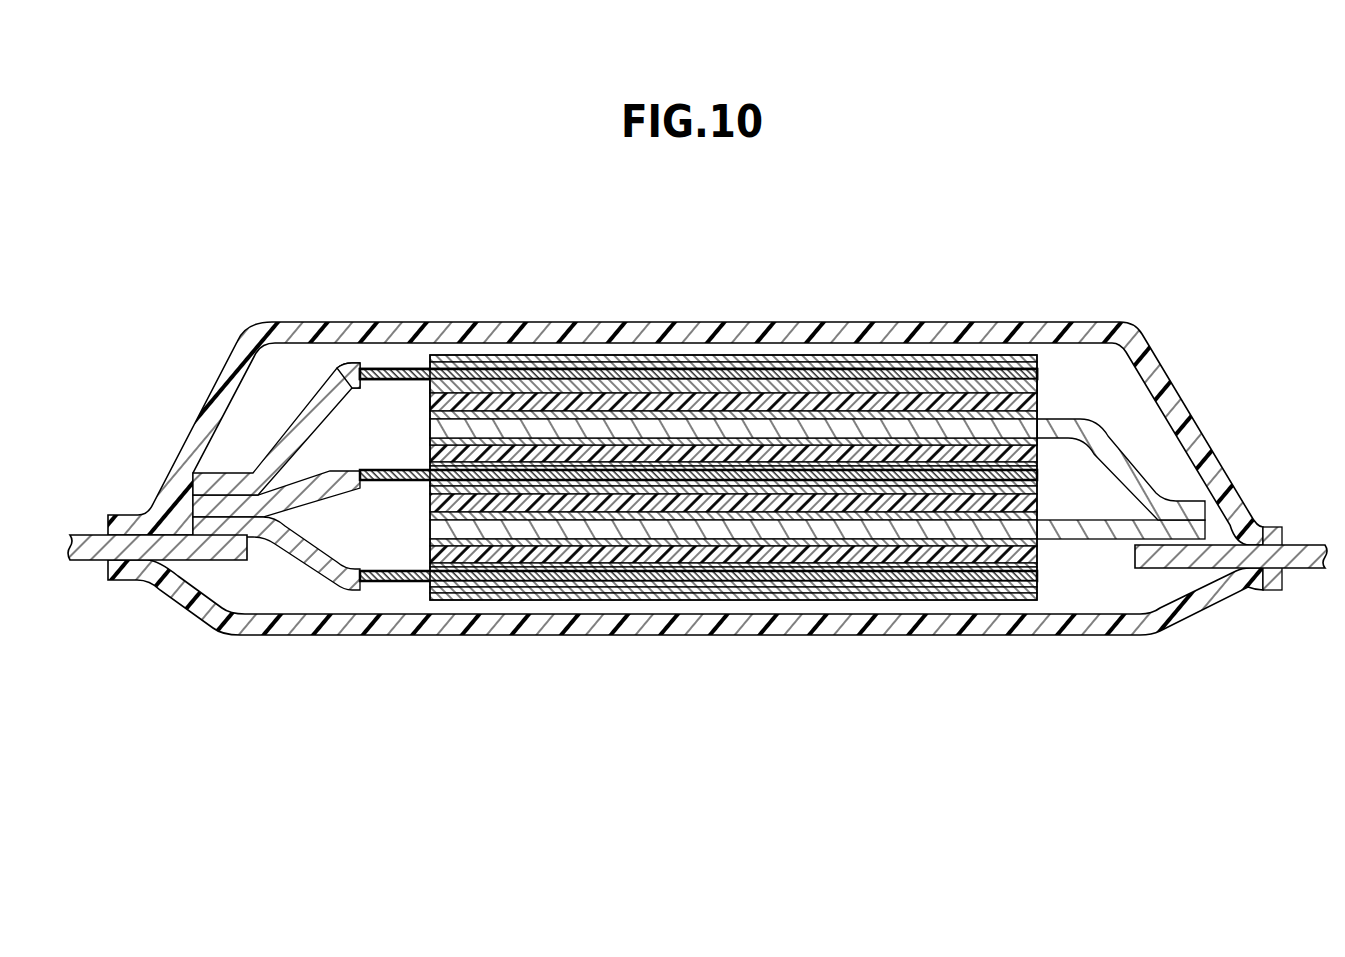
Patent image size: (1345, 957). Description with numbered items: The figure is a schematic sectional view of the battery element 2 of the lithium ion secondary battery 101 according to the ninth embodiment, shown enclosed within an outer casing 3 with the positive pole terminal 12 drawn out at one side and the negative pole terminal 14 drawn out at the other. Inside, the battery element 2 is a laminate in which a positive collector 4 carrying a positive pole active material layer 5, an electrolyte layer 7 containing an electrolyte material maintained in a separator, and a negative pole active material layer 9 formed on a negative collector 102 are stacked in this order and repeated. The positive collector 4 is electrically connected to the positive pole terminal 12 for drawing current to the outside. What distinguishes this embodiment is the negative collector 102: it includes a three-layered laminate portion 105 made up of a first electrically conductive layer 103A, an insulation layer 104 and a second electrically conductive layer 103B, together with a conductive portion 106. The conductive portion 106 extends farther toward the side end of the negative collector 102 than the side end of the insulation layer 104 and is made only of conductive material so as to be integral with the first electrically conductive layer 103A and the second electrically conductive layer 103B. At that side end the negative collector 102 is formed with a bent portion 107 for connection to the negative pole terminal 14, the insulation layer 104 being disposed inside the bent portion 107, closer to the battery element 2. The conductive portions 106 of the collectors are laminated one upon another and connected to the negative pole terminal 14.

The lithium ion secondary battery 101 is at (172, 253).
The negative collector 102 is at (404, 352).
The first electrically conductive layer 103A is at (694, 363).
The second electrically conductive layer 103B is at (620, 250).
The insulation layer 104 is at (631, 370).
The three-layered laminate portion 105 is at (698, 404).
The conductive portion 106 is at (318, 398).
The bent portion 107 is at (341, 366).
The negative pole active material layer 9 is at (843, 383).
The electrolyte layer 7 is at (888, 402).
The positive pole active material layer 5 is at (935, 445).
The positive collector 4 is at (975, 425).
The exterior casing 3 is at (1060, 333).
The battery element 2 is at (782, 404).
The positive pole terminal 12 is at (1298, 550).
The negative pole terminal 14 is at (93, 542).